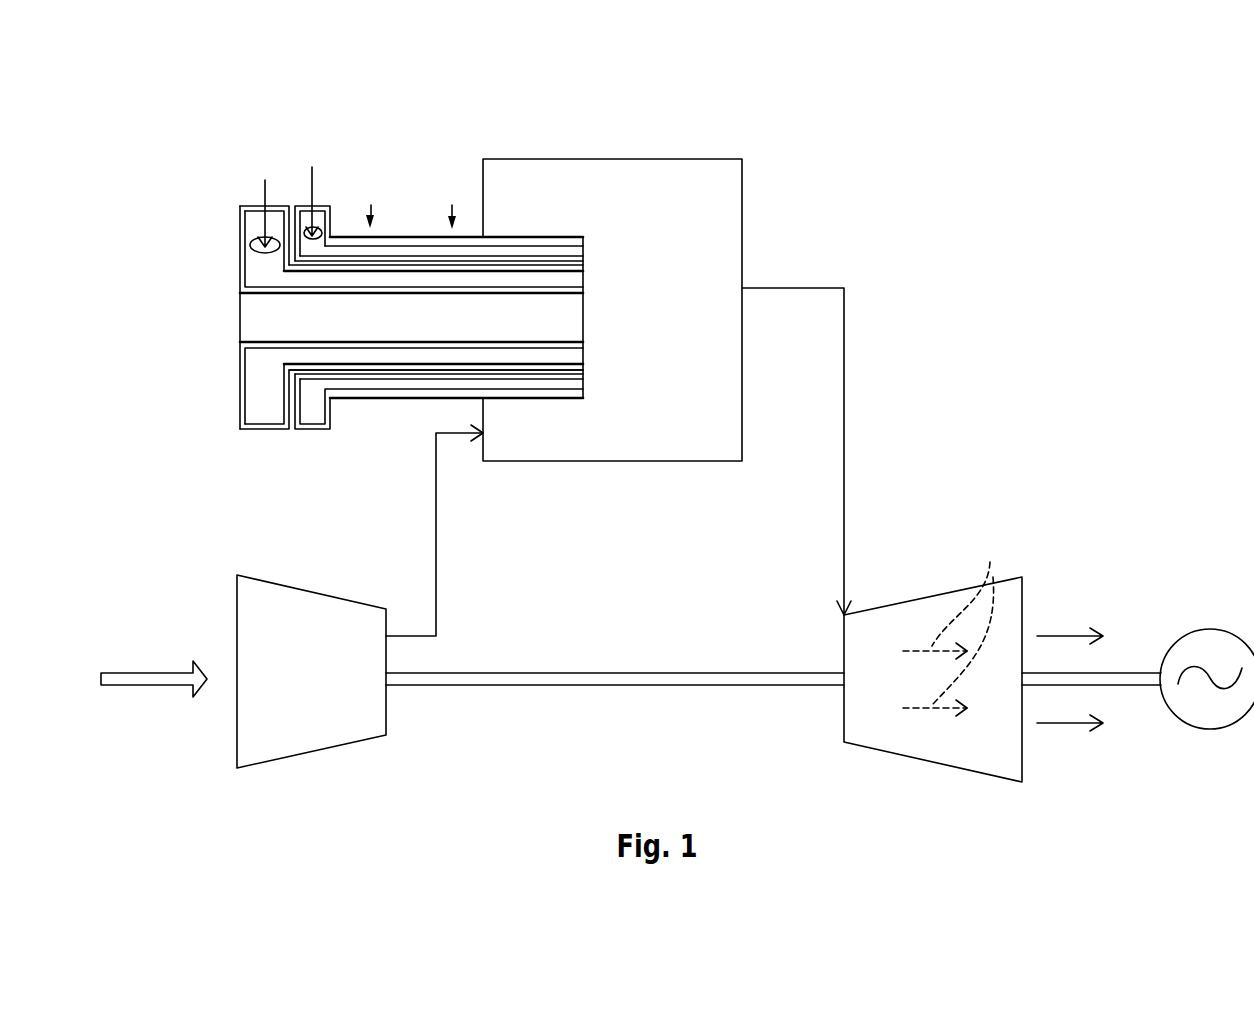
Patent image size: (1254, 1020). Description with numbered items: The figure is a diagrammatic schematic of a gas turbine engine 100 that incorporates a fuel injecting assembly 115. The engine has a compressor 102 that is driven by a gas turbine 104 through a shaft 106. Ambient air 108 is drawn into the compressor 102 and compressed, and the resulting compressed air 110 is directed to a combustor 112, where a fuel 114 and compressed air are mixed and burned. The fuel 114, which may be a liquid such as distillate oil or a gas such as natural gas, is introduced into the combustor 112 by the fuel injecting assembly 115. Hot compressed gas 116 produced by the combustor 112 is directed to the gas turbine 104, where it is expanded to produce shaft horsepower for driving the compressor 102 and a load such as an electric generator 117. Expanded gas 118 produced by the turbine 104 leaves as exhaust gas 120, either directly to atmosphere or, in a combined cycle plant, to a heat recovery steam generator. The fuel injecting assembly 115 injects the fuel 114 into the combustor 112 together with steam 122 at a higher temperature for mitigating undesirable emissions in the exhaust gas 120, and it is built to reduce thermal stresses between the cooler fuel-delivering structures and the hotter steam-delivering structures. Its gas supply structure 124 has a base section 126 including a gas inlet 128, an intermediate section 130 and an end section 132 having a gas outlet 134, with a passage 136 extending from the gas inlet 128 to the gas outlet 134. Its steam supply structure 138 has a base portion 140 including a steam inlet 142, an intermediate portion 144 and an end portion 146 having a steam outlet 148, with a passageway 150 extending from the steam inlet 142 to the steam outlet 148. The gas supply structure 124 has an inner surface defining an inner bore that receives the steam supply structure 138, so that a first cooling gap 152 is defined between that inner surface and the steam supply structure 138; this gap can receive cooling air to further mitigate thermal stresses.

The gas turbine engine 100 is at (890, 178).
The compressor 102 is at (318, 752).
The gas turbine 104 is at (927, 764).
The shaft 106 is at (597, 688).
The ambient air 108 is at (148, 690).
The compressed air 110 is at (437, 522).
The combustor 112 is at (732, 180).
The fuel 114 is at (311, 178).
The fuel injecting assembly 115 is at (371, 215).
The hot compressed gas 116 is at (848, 440).
The electric generator 117 is at (1210, 730).
The expanded gas 118 is at (957, 622).
The exhaust gas 120 is at (1068, 722).
The steam 122 is at (263, 195).
The gas supply structure 124 is at (452, 215).
The base section 126 is at (331, 216).
The gas inlet 128 is at (313, 240).
The intermediate section 130 is at (405, 236).
The end section 132 is at (545, 237).
The gas outlet 134 is at (587, 247).
The passage 136 is at (507, 245).
The steam supply structure 138 is at (227, 398).
The base portion 140 is at (265, 428).
The steam inlet 142 is at (252, 247).
The intermediate portion 144 is at (319, 363).
The end portion 146 is at (557, 343).
The steam outlet 148 is at (585, 355).
The passageway 150 is at (494, 348).
The first cooling gap 152 is at (587, 265).